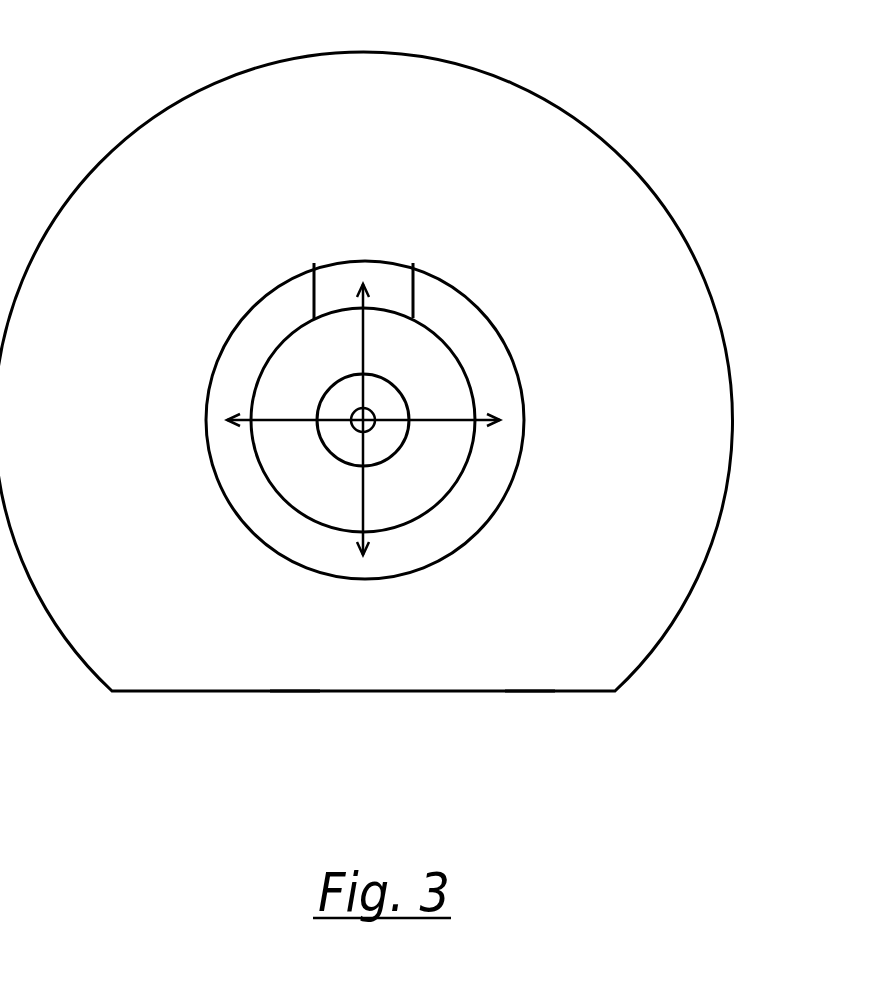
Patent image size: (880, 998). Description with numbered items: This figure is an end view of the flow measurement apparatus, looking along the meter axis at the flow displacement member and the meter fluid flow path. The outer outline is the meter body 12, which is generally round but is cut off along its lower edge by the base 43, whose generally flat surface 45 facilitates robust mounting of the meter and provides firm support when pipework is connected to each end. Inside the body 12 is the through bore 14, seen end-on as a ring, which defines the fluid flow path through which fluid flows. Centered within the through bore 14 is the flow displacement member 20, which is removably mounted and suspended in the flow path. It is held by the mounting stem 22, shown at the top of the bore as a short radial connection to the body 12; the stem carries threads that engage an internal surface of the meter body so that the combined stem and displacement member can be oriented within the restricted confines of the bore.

The body 12 is at (685, 430).
The through bore 14 is at (487, 363).
The flow displacement member 20 is at (315, 500).
The mounting stem 22 is at (397, 283).
The base 43 is at (530, 691).
The flat surface 45 is at (293, 692).